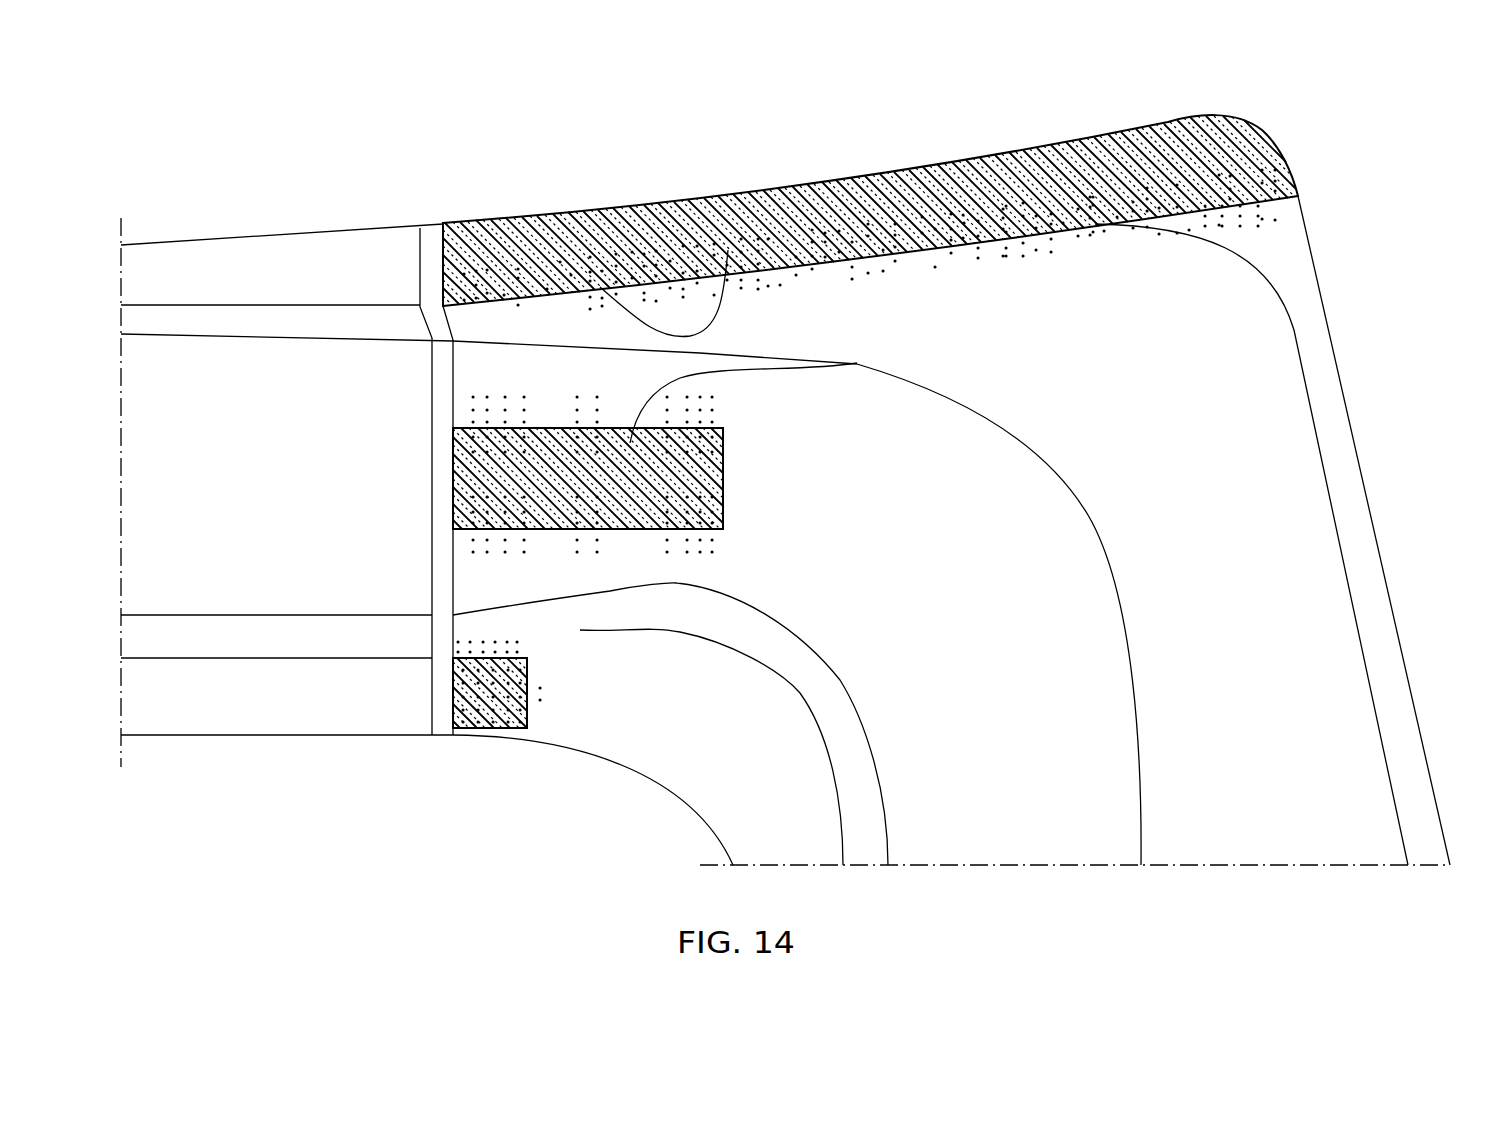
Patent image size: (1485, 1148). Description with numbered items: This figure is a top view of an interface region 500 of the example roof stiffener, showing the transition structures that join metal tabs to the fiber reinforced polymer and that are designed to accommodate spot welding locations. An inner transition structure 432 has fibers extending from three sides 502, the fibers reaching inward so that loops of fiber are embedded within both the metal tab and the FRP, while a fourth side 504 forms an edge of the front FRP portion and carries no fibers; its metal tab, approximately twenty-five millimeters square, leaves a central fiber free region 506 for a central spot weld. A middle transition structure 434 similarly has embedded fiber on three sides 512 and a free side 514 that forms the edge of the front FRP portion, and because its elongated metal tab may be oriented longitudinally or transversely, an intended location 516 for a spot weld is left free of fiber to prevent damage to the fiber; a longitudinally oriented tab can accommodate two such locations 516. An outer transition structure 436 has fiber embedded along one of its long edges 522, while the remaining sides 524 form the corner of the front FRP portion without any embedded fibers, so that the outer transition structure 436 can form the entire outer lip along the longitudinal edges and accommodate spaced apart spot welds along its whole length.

The interface region 500 is at (228, 114).
The inner transition structure 432 is at (462, 735).
The middle transition structure 434 is at (468, 460).
The outer transition structure 436 is at (523, 243).
The three sides 502 is at (486, 728).
The fourth side 504 is at (442, 705).
The central fiber free region 506 is at (503, 723).
The three sides 512 is at (557, 428).
The free side 514 is at (453, 490).
The intended location for a spot weld 516 is at (857, 363).
The long edge 522 is at (728, 250).
The remaining sides 524 is at (442, 243).